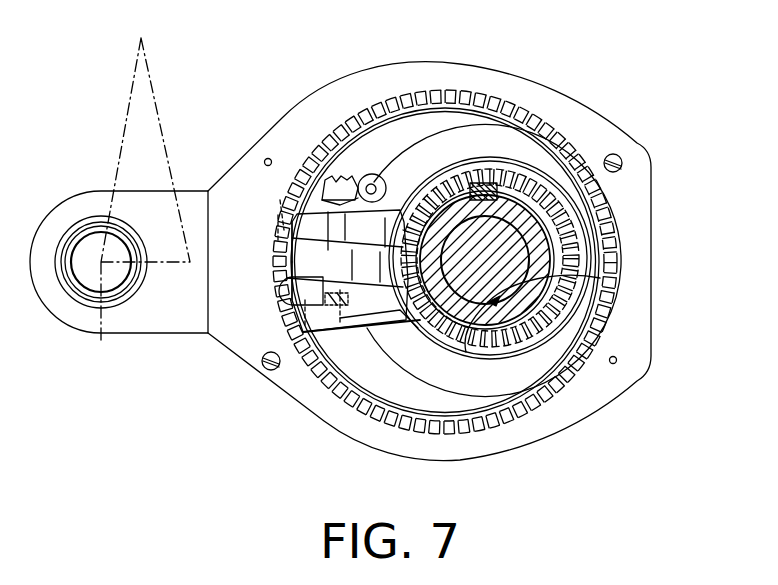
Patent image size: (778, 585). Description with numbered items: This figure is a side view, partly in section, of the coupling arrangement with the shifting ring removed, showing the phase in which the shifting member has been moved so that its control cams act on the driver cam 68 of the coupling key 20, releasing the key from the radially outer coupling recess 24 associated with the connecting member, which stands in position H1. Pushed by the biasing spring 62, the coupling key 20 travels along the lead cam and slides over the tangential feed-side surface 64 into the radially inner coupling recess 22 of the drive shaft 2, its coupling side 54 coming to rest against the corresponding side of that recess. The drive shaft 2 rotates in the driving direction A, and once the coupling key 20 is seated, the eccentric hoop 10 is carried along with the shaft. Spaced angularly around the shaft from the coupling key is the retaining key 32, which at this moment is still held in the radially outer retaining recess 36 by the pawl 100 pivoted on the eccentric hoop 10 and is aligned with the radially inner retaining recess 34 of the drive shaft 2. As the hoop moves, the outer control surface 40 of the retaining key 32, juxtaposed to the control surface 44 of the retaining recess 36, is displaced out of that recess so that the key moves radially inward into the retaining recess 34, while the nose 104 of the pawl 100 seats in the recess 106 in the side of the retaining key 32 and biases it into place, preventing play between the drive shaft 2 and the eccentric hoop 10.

The drive shaft 2 is at (540, 274).
The eccentric hoop 10 is at (430, 120).
The coupling key 20 is at (360, 313).
The coupling recess 22 is at (424, 316).
The coupling recess 24 is at (340, 261).
The retaining key 32 is at (290, 262).
The retaining recess 34 is at (376, 231).
The retaining recess 36 is at (279, 204).
The control surface 40 is at (300, 238).
The control surface 44 is at (279, 218).
The coupling side 54 is at (366, 267).
The biasing spring 62 is at (361, 323).
The tangential feed-side surface 64 is at (424, 338).
The driver cam 68 is at (285, 292).
The pawl 100 is at (357, 178).
The nose 104 is at (386, 184).
The recess 106 is at (318, 232).
The driving direction A is at (532, 332).
The position of reciprocating movement H1 is at (122, 206).